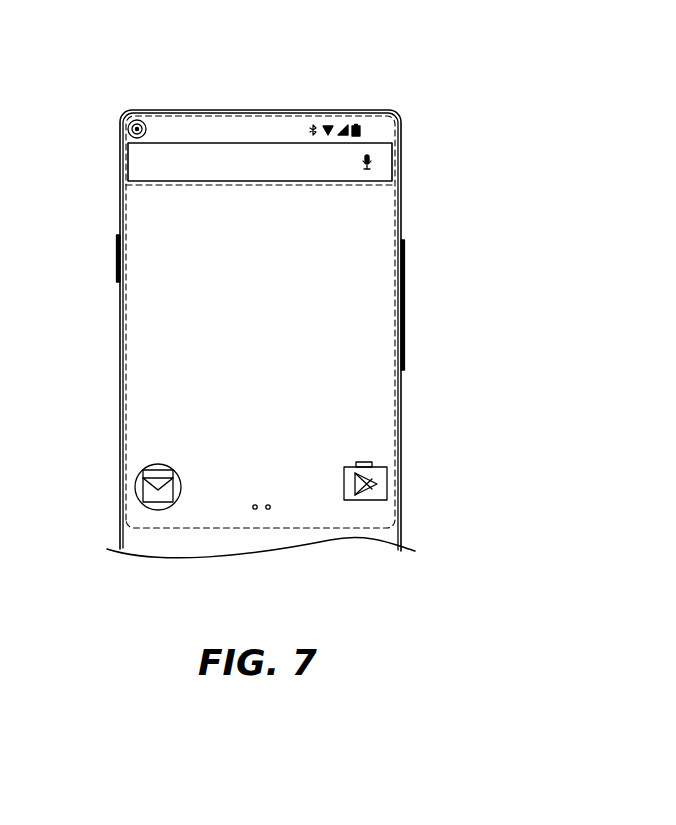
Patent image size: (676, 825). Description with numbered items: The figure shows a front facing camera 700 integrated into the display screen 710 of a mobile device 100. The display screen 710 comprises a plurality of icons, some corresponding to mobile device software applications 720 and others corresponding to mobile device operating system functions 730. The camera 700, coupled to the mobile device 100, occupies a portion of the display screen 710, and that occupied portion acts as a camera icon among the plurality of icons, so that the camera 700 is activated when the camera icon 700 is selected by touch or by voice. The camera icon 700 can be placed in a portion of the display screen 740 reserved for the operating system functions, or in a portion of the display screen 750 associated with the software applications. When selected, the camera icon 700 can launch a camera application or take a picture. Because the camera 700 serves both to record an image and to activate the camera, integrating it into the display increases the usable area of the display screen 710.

The mobile device 100 is at (438, 135).
The front facing camera 700 is at (128, 128).
The display screen 710 is at (218, 133).
The mobile device software applications 720 is at (370, 492).
The mobile device operating system functions 730 is at (262, 160).
The portion of the display screen reserved for the mobile device operating system fu 740 is at (392, 170).
The portion of the display screen associated with the mobile device software applica 750 is at (380, 328).